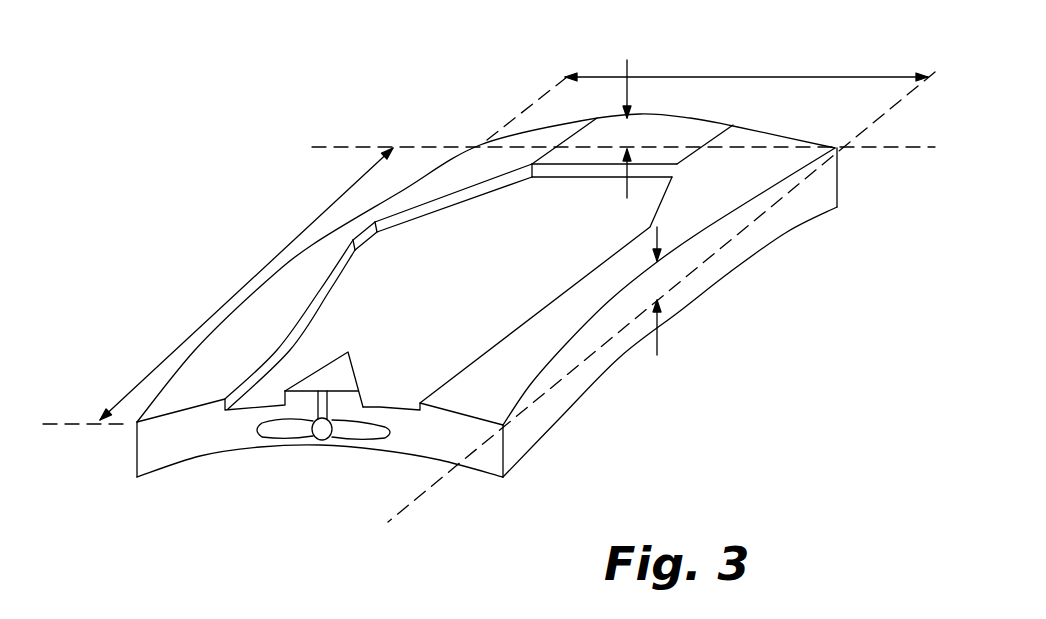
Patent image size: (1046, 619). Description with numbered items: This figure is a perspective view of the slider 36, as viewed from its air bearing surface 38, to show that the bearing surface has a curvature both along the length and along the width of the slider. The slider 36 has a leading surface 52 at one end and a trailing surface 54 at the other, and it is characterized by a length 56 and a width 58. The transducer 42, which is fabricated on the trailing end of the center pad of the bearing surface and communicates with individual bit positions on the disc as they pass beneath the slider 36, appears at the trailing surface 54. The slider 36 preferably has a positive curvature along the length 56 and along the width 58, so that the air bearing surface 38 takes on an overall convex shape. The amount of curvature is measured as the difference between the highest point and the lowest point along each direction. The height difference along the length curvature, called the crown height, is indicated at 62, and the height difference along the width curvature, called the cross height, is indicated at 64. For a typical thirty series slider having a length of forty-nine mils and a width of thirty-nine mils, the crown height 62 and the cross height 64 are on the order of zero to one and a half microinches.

The slider 36 is at (613, 260).
The air bearing surface 38 is at (303, 277).
The transducer 42 is at (317, 428).
The leading surface 52 is at (760, 130).
The trailing surface 54 is at (418, 437).
The length 56 is at (247, 283).
The width 58 is at (773, 78).
The crown height 62 is at (657, 337).
The cross height 64 is at (627, 192).